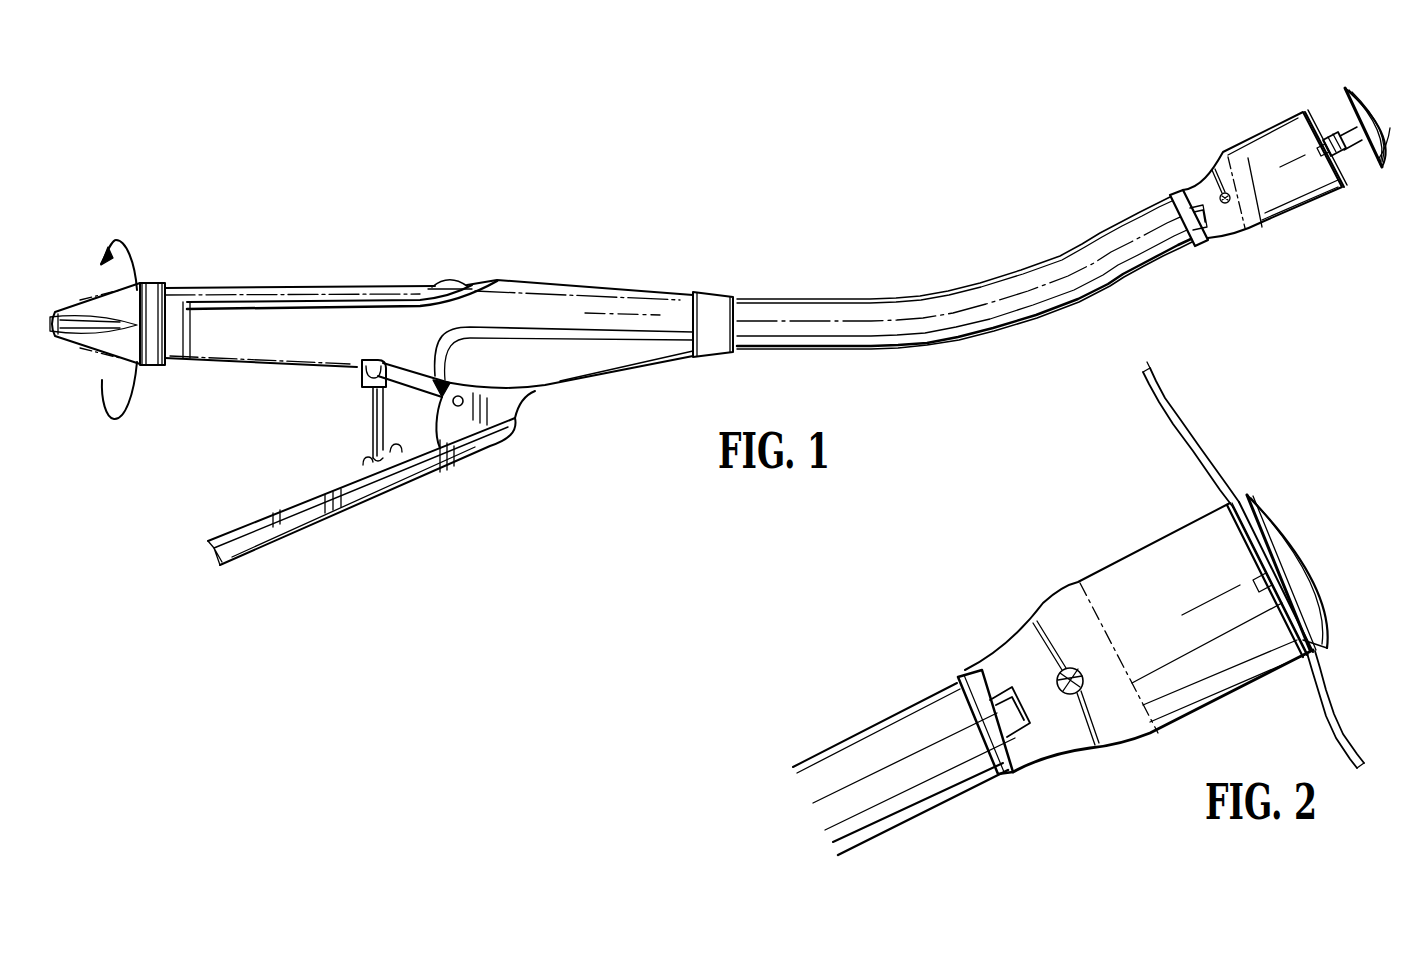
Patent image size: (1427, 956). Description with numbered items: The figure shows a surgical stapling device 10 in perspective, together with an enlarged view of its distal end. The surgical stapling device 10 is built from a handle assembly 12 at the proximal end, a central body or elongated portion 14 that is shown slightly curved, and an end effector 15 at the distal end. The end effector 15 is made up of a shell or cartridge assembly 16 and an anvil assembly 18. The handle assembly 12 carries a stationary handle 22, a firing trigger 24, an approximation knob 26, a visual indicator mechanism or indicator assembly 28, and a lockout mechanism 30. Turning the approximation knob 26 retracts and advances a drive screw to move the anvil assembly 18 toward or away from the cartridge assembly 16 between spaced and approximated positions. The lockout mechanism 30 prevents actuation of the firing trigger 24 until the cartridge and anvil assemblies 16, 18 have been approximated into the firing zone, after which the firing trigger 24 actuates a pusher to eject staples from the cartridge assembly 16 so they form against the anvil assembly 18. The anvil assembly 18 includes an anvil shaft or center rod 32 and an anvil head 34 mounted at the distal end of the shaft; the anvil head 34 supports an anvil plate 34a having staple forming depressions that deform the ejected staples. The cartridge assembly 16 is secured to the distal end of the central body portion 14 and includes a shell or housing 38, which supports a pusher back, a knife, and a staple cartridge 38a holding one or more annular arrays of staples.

In FIG. 1, the surgical stapling device 10 is at (658, 208).
In FIG. 1, the handle assembly 12 is at (356, 280).
In FIG. 1, the central body or elongated portion 14 is at (894, 292).
In FIG. 1, the end effector 15 is at (1302, 102).
In FIG. 1, the shell or cartridge assembly 16 is at (1287, 226).
In FIG. 1, the anvil assembly 18 is at (1362, 94).
In FIG. 2, the anvil assembly 18 is at (1285, 518).
In FIG. 1, the stationary handle 22 is at (270, 312).
In FIG. 1, the firing trigger 24 is at (468, 450).
In FIG. 1, the approximation knob 26 is at (87, 352).
In FIG. 1, the visual indicator mechanism or indicator assembly 28 is at (452, 276).
In FIG. 1, the lockout mechanism 30 is at (366, 413).
In FIG. 1, the anvil shaft or center rod 32 is at (1343, 135).
In FIG. 1, the anvil head 34 is at (1378, 140).
In FIG. 2, the anvil head 34 is at (1312, 588).
In FIG. 1, the anvil plate 34a is at (1365, 163).
In FIG. 1, the shell or housing 38 is at (1250, 150).
In FIG. 2, the shell or housing 38 is at (1130, 555).
In FIG. 1, the staple cartridge 38a is at (1343, 185).
In FIG. 2, the staple cartridge 38a is at (1315, 645).